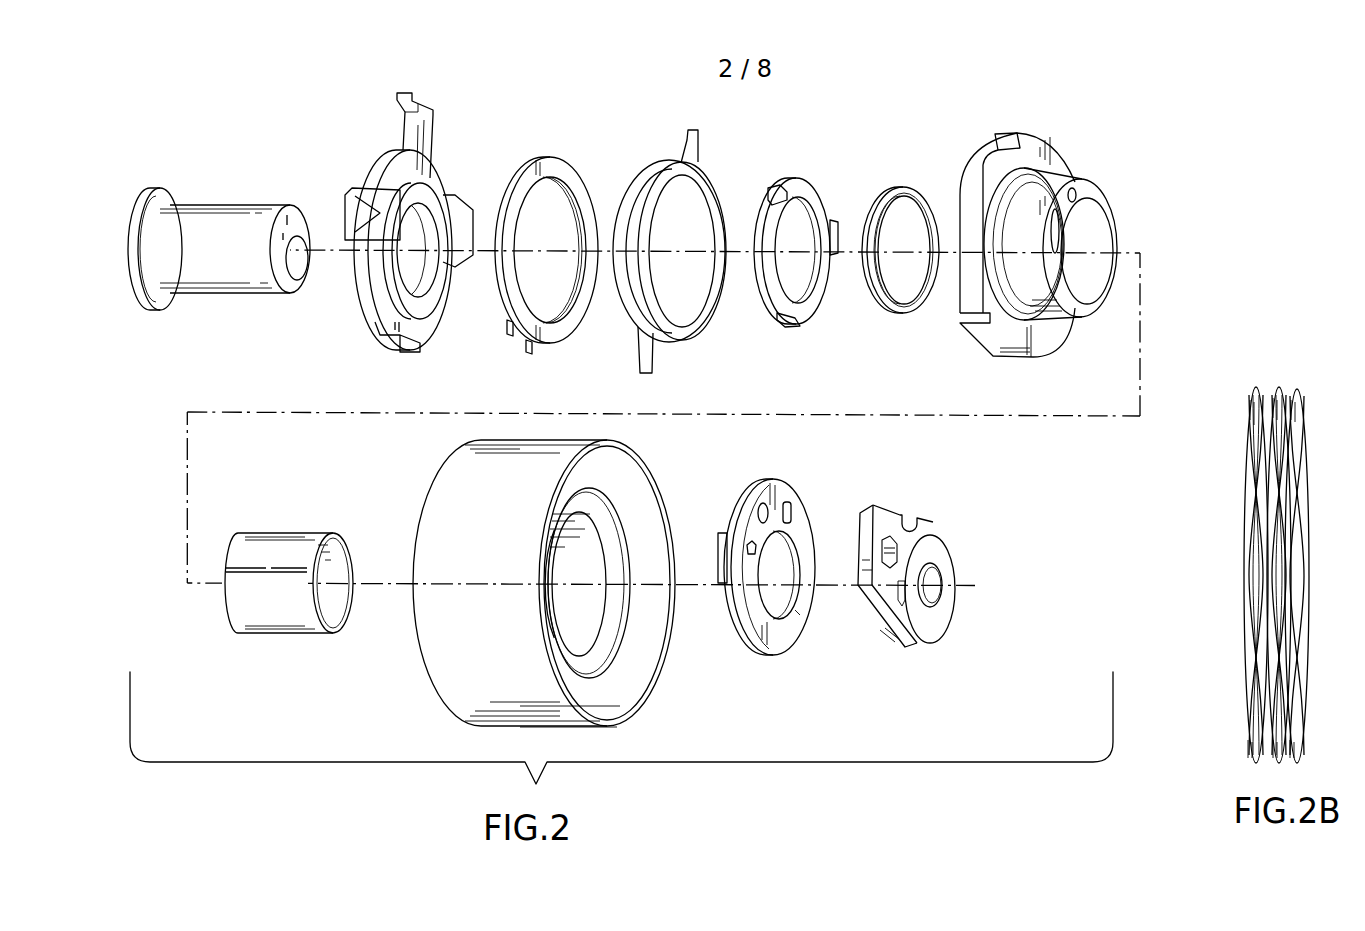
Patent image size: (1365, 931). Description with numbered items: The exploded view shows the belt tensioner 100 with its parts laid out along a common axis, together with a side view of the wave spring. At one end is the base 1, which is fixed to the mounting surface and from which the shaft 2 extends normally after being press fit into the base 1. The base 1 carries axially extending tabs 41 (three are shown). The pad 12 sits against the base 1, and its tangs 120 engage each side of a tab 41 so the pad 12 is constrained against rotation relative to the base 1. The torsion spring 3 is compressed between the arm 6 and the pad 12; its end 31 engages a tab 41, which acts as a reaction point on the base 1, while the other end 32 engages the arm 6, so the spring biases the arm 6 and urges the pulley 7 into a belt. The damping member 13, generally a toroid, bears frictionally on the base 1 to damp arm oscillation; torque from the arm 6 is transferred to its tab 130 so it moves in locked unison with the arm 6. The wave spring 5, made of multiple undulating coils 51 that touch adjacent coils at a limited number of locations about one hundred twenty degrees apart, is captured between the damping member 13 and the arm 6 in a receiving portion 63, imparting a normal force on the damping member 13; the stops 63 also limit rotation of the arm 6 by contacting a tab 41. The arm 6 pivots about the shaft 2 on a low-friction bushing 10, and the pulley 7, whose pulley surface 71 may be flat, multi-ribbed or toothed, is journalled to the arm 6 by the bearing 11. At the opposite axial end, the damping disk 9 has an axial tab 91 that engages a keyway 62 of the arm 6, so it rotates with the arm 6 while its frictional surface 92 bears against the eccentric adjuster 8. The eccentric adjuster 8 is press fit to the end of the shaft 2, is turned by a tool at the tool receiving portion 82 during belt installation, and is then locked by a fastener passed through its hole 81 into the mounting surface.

In FIG. 2, the tensioner 100 is at (1094, 148).
In FIG. 2, the base 1 is at (380, 172).
In FIG. 2, the tab 41 is at (455, 195).
In FIG. 2, the shaft 2 is at (180, 187).
In FIG. 2, the pad 12 is at (546, 157).
In FIG. 2, the tangs 120 is at (530, 352).
In FIG. 2, the torsion spring 3 is at (636, 181).
In FIG. 2, the end of spring 31 is at (640, 366).
In FIG. 2, the other end of spring 32 is at (688, 138).
In FIG. 2, the damping member 13 is at (812, 180).
In FIG. 2, the tab 130 is at (776, 191).
In FIG. 2, the wave spring 5 is at (905, 190).
In FIG. 2B, the wave spring 5 is at (1258, 388).
In FIG. 2B, the coils 51 is at (1297, 390).
In FIG. 2, the arm 6 is at (985, 166).
In FIG. 2, the keyways 62 is at (1058, 242).
In FIG. 2, the stops 63 is at (1003, 133).
In FIG. 2, the bushing 10 is at (286, 536).
In FIG. 2, the pulley 7 is at (445, 468).
In FIG. 2, the pulley surface 71 is at (500, 726).
In FIG. 2, the bearing 11 is at (605, 500).
In FIG. 2, the damping disk 9 is at (785, 482).
In FIG. 2, the tab 91 is at (720, 588).
In FIG. 2, the face of disc 92 is at (788, 645).
In FIG. 2, the eccentric adjuster 8 is at (880, 509).
In FIG. 2, the hole 81 is at (935, 584).
In FIG. 2, the tool receiving portion 82 is at (893, 555).